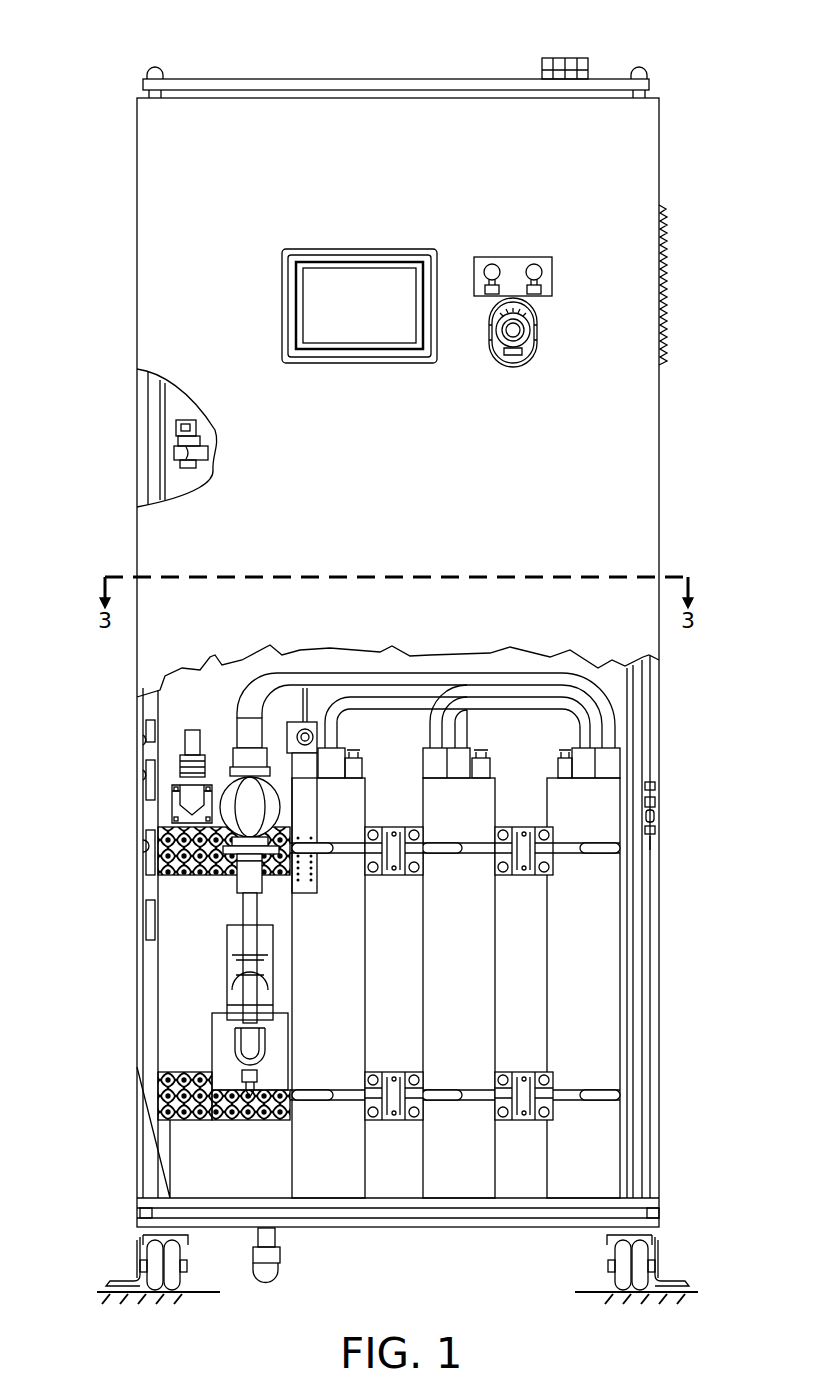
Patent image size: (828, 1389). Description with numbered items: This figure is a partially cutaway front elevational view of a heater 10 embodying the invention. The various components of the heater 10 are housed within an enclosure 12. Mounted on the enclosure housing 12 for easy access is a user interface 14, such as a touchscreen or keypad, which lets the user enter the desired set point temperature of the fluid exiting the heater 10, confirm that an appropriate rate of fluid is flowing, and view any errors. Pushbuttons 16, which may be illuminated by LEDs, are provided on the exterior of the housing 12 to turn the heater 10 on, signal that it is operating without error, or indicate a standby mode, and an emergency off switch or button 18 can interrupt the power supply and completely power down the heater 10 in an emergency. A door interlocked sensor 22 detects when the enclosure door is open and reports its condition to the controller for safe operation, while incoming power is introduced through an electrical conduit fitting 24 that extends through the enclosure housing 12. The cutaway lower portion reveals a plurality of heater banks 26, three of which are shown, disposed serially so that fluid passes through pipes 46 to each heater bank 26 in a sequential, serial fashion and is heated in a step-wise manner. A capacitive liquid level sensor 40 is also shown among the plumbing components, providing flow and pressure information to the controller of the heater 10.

The heater 10 is at (56, 364).
The enclosure 12 is at (650, 132).
The user interface 14 is at (338, 281).
The pushbuttons 16 is at (514, 257).
The emergency off switch 18 is at (504, 356).
The door interlocked sensor 22 is at (162, 446).
The electrical conduit fitting 24 is at (565, 57).
The heater banks 26 is at (344, 961).
The capacitive liquid level sensor 40 is at (300, 735).
The pipes 46 is at (372, 676).